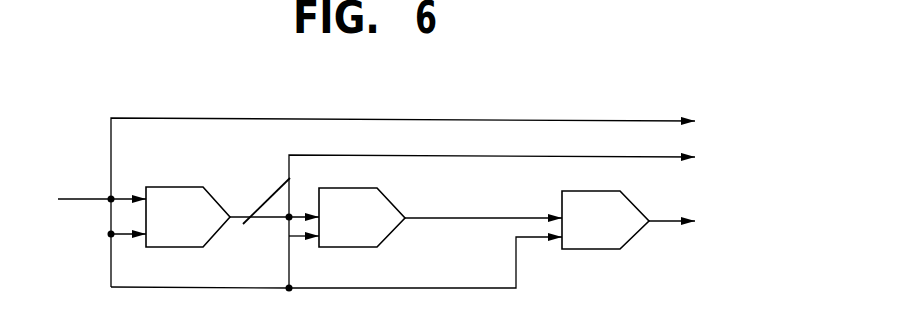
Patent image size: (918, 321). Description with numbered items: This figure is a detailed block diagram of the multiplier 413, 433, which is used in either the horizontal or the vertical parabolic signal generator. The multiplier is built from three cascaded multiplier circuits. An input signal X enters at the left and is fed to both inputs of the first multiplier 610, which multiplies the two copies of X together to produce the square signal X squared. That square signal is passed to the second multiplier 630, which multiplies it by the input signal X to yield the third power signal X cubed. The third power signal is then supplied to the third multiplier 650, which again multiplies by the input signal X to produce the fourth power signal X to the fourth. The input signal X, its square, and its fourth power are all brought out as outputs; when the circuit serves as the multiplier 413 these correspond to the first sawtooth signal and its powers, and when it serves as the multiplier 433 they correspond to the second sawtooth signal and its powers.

The multiplier 413 is at (420, 175).
The multiplier 433 is at (607, 92).
The first multiplier 610 is at (213, 235).
The second multiplier 630 is at (387, 237).
The third multiplier 650 is at (590, 249).